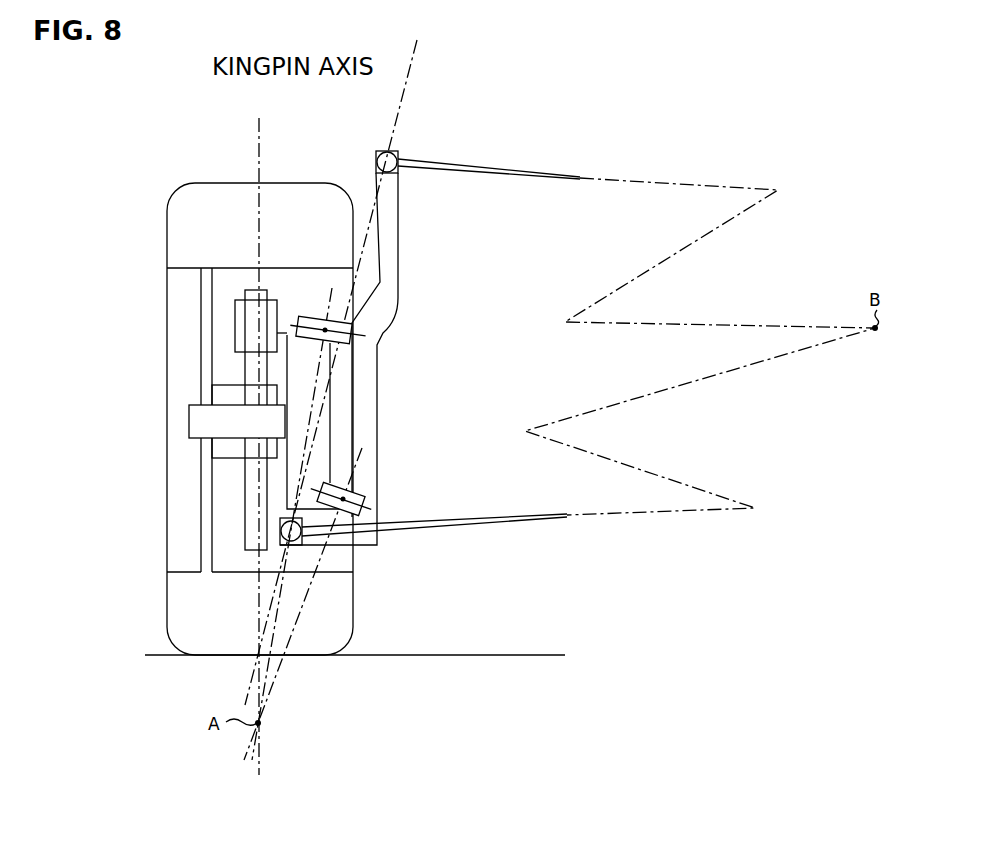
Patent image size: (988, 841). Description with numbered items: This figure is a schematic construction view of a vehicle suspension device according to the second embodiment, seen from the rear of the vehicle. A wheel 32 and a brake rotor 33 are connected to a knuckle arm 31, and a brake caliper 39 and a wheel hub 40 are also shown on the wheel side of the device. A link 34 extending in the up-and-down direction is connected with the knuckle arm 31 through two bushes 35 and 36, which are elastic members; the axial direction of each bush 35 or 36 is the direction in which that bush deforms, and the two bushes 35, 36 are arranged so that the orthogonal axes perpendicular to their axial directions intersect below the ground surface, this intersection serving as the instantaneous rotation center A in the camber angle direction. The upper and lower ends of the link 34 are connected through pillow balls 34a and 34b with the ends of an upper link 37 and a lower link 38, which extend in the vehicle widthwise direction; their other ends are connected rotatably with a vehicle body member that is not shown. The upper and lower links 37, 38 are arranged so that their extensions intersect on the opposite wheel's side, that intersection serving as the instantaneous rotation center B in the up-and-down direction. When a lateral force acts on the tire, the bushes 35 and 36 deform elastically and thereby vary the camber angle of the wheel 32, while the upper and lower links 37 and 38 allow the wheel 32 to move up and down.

The knuckle arm 31 is at (332, 430).
The wheel 32 is at (188, 206).
The brake rotor 33 is at (257, 373).
The link 34 is at (373, 359).
The pillow ball 34a is at (397, 161).
The pillow ball 34b is at (303, 543).
The bush 35 is at (366, 329).
The bush 36 is at (372, 500).
The upper link 37 is at (466, 174).
The lower link 38 is at (484, 521).
The brake caliper 39 is at (237, 323).
The wheel hub 40 is at (222, 451).